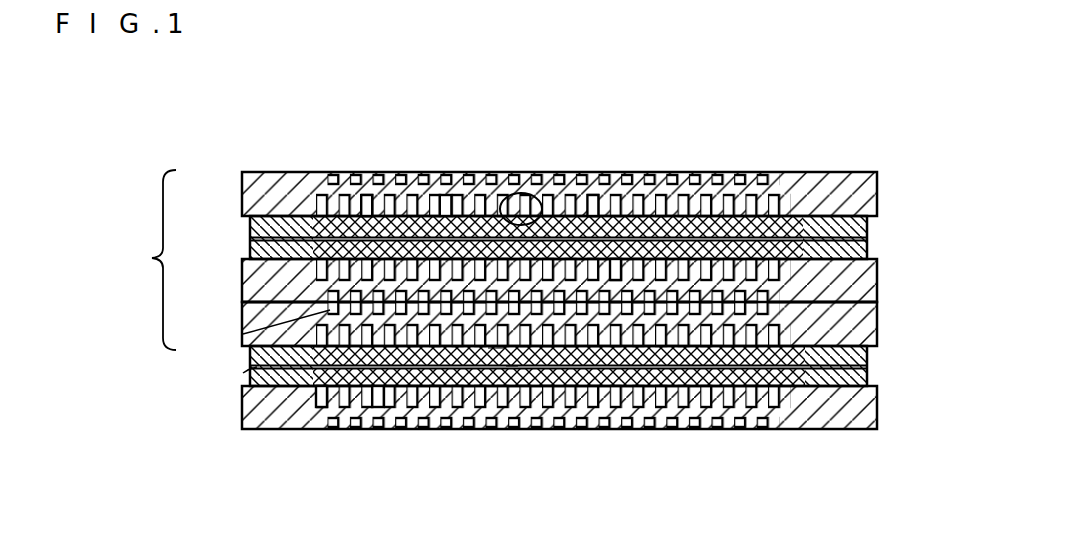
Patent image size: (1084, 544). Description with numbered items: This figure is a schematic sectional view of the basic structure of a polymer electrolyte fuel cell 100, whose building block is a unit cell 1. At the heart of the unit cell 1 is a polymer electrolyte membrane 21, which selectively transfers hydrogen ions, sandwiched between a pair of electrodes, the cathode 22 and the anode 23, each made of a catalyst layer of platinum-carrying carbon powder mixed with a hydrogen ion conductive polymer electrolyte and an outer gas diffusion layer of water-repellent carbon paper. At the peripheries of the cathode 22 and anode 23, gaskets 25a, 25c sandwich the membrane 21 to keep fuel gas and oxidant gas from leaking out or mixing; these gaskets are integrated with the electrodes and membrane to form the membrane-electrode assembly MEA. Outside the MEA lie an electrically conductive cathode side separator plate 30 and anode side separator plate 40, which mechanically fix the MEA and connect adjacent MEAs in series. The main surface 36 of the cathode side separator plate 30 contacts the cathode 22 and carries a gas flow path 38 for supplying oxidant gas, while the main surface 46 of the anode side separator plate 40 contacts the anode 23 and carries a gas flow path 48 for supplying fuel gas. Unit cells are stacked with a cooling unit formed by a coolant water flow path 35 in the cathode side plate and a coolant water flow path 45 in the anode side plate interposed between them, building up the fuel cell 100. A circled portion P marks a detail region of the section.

The polymer electrolyte fuel cell 100 is at (564, 301).
The unit cell 1 is at (156, 260).
The membrane-electrode assembly MEA is at (552, 223).
The anode side separator plate 40 is at (821, 190).
The cathode side separator plate 30 is at (870, 283).
The gasket 25a is at (870, 219).
The polymer electrolyte membrane 21 is at (868, 238).
The gasket 25c is at (867, 252).
The anode 23 is at (373, 210).
The cathode 22 is at (445, 213).
The gas flow path 48 is at (599, 214).
The gas flow path 38 is at (614, 278).
The main surface 46 is at (496, 358).
The main surface 36 is at (512, 362).
The coolant water flow path 35 is at (243, 334).
The coolant water flow path 45 is at (243, 373).
The enlarged portion P is at (522, 192).